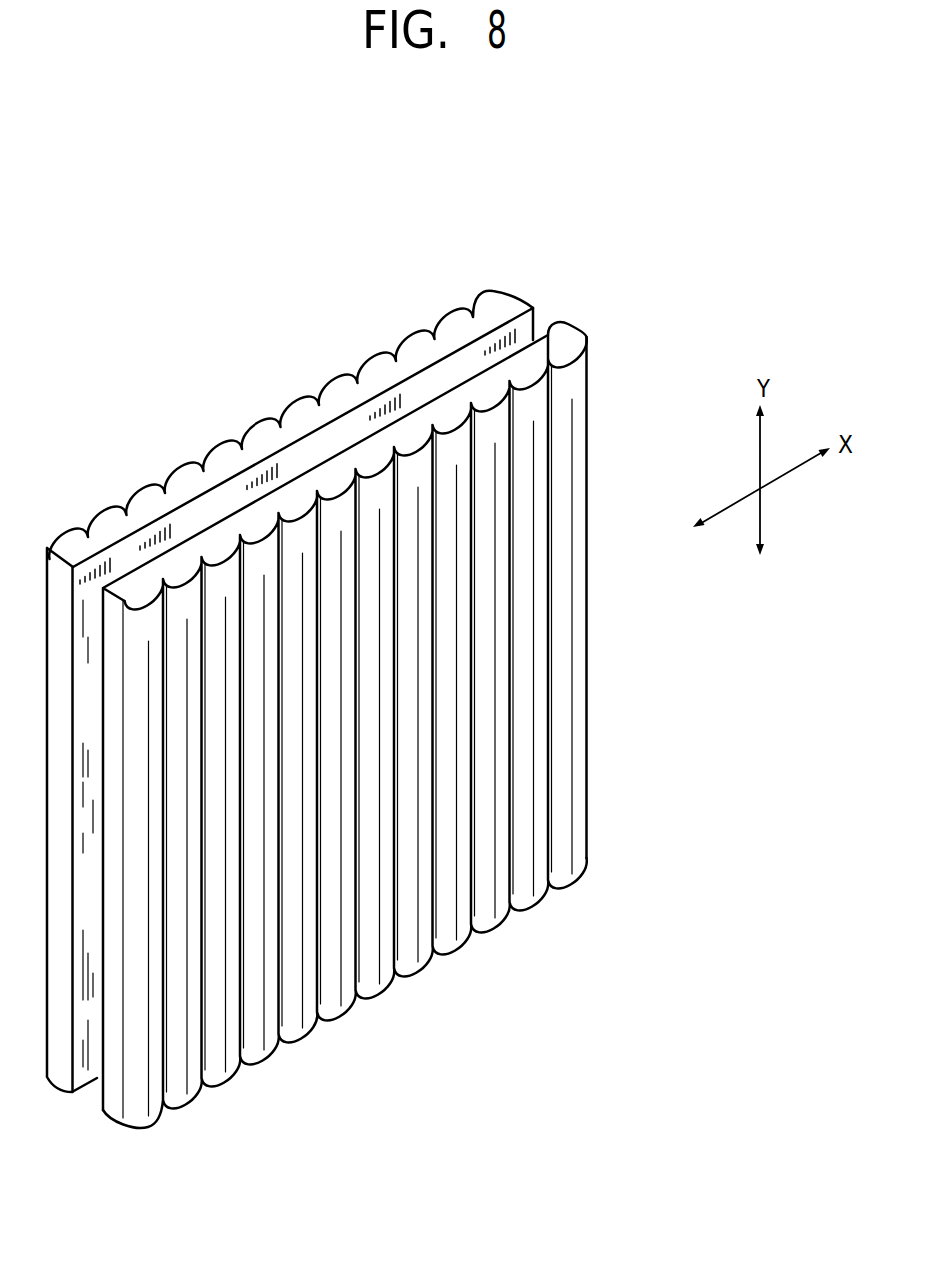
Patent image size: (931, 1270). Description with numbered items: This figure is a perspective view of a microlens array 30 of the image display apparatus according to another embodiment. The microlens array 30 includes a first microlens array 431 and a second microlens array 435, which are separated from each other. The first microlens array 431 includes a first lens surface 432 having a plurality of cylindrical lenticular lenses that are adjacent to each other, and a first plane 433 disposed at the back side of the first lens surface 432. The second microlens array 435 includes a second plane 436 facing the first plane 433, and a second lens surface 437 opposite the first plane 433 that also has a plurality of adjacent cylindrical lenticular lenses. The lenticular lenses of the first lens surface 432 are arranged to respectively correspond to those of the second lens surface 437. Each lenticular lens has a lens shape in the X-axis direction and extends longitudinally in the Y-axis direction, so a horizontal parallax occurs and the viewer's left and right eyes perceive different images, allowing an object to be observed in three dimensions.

The microlens array 30 is at (203, 355).
The first microlens array 431 is at (570, 170).
The first lens surface 432 is at (470, 297).
The first plane 433 is at (535, 316).
The second microlens array 435 is at (724, 300).
The second plane 436 is at (546, 334).
The second lens surface 437 is at (588, 346).